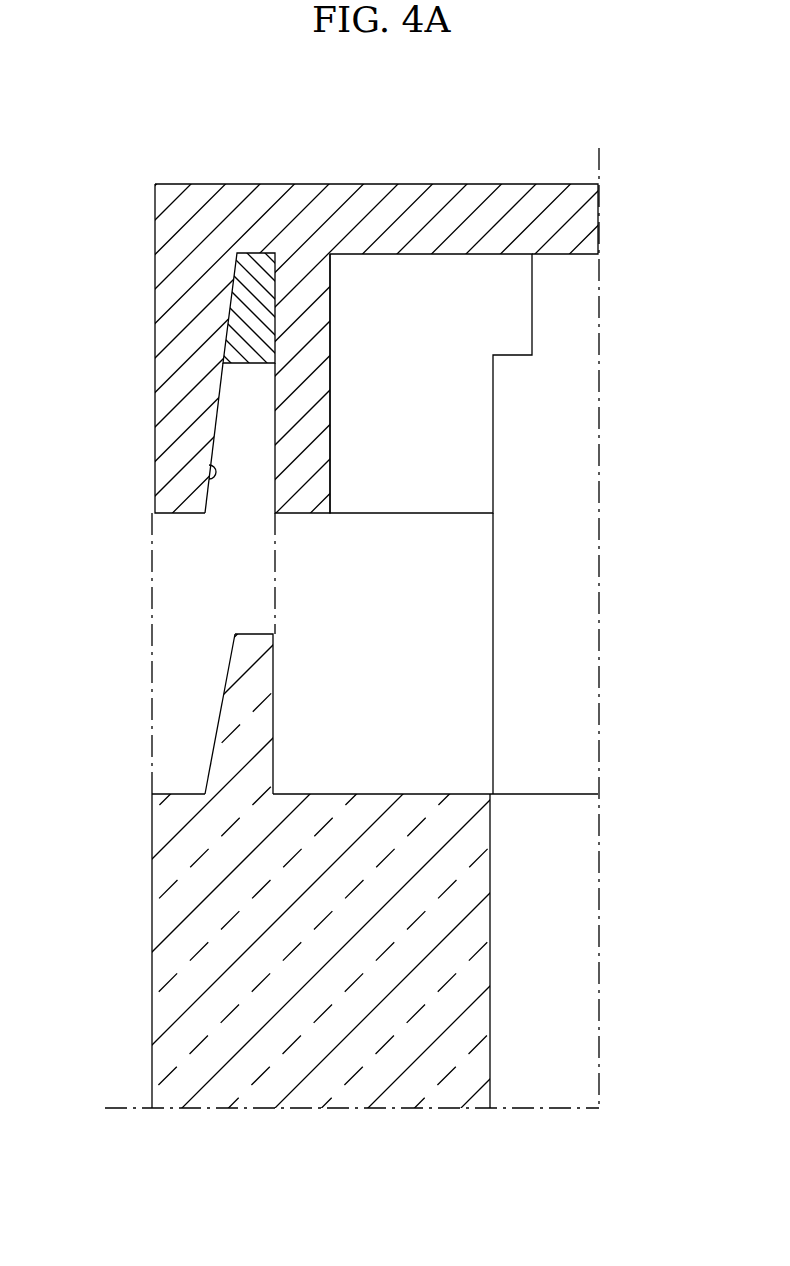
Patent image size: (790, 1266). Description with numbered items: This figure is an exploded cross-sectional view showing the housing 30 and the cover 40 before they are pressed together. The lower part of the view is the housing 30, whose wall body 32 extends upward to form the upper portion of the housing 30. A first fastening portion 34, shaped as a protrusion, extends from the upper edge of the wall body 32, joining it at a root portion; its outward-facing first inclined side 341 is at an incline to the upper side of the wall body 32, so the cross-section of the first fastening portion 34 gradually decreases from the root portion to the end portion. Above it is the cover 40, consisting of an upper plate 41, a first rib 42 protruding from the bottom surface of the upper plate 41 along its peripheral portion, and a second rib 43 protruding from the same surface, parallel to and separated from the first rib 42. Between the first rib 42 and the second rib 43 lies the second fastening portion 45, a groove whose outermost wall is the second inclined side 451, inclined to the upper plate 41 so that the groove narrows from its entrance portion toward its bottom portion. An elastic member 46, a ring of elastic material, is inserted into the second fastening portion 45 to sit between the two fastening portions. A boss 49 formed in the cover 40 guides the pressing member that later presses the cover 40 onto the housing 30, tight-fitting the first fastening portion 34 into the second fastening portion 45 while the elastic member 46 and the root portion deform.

The housing 30 is at (395, 870).
The wall body 32 is at (470, 930).
The first fastening portion 34 is at (228, 728).
The first inclined side 341 is at (230, 655).
The cover 40 is at (395, 632).
The upper plate 41 is at (550, 192).
The first rib 42 is at (158, 313).
The second rib 43 is at (290, 440).
The second fastening portion 45 is at (243, 405).
The second inclined side 451 is at (208, 478).
The elastic member 46 is at (247, 299).
The boss 49 is at (470, 444).